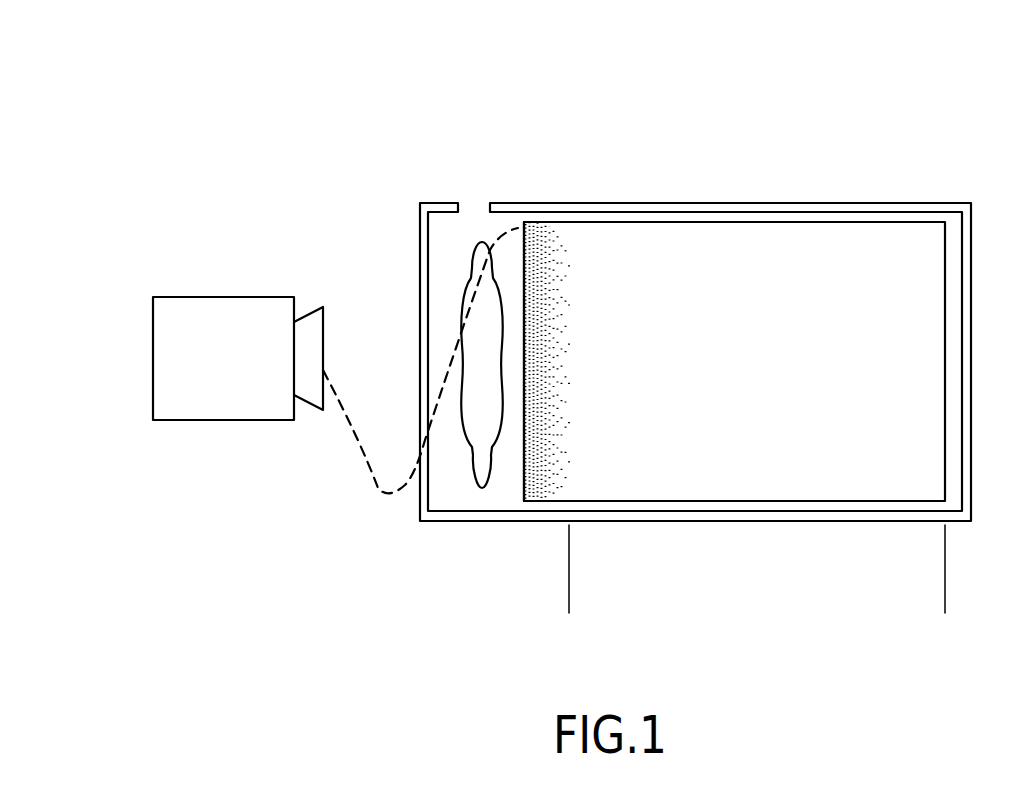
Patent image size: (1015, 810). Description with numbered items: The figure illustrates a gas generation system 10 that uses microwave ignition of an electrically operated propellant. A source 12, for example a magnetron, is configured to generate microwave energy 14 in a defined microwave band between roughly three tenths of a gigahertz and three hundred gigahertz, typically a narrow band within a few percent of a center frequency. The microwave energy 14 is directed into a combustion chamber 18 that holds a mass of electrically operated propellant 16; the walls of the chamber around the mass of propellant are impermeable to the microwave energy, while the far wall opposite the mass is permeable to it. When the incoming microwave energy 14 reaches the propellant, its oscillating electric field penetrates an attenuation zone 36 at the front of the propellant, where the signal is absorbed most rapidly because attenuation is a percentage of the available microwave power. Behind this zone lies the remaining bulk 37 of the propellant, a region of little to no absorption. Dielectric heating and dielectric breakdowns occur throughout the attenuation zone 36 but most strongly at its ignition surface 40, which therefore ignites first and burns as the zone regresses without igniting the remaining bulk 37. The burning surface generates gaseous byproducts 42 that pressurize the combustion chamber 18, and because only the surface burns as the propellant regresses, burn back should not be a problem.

The gas generation system 10 is at (693, 118).
The source 12 is at (213, 297).
The microwave energy 14 is at (360, 467).
The electrically operated propellant 16 is at (751, 379).
The combustion chamber 18 is at (814, 203).
The attenuation zone 36 is at (547, 500).
The remaining bulk 37 is at (945, 553).
The ignition surface 40 is at (524, 495).
The gaseous byproducts 42 is at (458, 260).